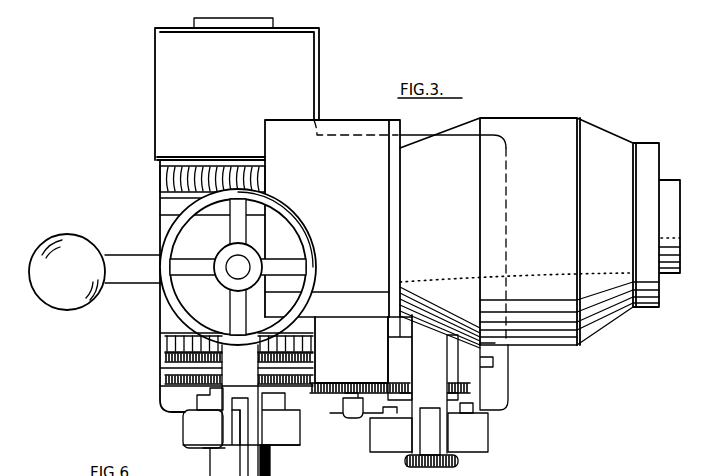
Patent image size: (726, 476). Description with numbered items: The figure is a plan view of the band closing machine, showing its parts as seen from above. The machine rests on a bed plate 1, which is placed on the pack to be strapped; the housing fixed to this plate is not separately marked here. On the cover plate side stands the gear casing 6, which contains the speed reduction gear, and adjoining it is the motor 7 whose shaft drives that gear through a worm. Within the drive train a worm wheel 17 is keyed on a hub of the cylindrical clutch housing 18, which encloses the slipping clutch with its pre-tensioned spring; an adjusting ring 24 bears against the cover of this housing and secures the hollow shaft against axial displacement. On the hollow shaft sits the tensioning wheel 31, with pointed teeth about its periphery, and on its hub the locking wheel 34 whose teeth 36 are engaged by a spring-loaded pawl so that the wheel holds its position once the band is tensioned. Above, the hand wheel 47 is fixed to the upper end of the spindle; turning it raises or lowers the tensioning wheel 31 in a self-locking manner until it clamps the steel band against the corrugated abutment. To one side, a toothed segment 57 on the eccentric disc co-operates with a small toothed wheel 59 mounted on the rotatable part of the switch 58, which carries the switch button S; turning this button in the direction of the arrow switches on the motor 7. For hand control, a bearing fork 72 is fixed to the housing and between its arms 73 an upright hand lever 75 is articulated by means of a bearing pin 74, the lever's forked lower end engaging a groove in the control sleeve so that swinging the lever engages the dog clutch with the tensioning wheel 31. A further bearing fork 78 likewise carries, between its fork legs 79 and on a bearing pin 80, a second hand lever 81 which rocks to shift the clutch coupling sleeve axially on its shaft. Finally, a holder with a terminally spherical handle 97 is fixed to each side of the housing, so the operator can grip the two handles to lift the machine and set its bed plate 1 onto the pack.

The bed plate 1 is at (500, 367).
The gear casing 6 is at (354, 146).
The motor 7 is at (540, 233).
The worm wheel 17 is at (162, 176).
The clutch housing 18 is at (157, 80).
The adjusting ring 24 is at (270, 24).
The tensioning wheel 31 is at (178, 372).
The locking wheel 34 is at (162, 334).
The teeth 36 is at (166, 345).
The hand wheel 47 is at (300, 233).
The toothed segment 57 is at (398, 387).
The switch 58 is at (351, 350).
The small toothed wheel 59 is at (334, 386).
The bearing fork 72 is at (228, 388).
The arms 73 is at (232, 404).
The pin 74 is at (230, 425).
The hand lever 75 is at (237, 438).
The bearing fork 78 is at (477, 411).
The fork legs 79 is at (448, 427).
The bearing pin 80 is at (440, 438).
The hand lever 81 is at (455, 457).
The spherical handle 97 is at (85, 250).
The switch button S is at (348, 419).